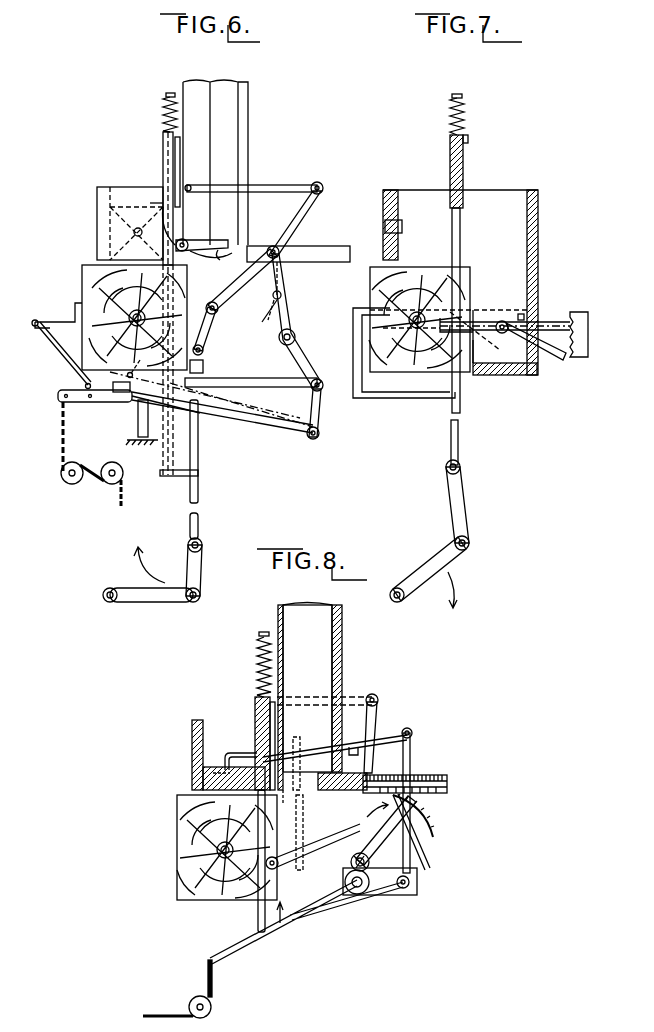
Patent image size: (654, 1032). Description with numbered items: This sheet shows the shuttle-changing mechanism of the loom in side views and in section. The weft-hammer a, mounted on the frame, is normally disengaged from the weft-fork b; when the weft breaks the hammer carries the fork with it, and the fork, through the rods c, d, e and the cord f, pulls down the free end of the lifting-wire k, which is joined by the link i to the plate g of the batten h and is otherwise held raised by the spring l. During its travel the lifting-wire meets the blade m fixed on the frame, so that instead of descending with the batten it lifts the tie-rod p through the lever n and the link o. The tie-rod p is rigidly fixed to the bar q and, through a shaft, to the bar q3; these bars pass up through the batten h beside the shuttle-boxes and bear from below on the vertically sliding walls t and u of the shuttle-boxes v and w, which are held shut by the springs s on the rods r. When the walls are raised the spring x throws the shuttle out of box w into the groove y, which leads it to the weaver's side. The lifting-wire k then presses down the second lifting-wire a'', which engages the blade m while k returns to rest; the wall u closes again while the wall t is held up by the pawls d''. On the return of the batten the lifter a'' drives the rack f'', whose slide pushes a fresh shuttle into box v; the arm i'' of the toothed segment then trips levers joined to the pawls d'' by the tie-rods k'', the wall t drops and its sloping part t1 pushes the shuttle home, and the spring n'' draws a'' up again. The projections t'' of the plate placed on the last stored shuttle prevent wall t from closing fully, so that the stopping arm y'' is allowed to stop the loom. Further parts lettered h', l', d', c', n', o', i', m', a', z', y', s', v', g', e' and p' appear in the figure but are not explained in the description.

In FIG. 6, the rod r is at (169, 87).
In FIG. 7, the rod r is at (457, 88).
In FIG. 8, the rod r is at (264, 626).
In FIG. 6, the spring s is at (162, 114).
In FIG. 7, the spring s is at (447, 116).
In FIG. 8, the spring s is at (255, 667).
In FIG. 6, the sliding wall t is at (159, 303).
In FIG. 8, the sliding wall t is at (254, 743).
In FIG. 6, the sloping part t1 is at (151, 195).
In FIG. 6, the shuttle-box v is at (116, 223).
In FIG. 8, the shuttle-box v is at (228, 743).
In FIG. 6, the column h' is at (226, 160).
In FIG. 8, the column h' is at (316, 681).
In FIG. 6, the projection t'' is at (254, 163).
In FIG. 8, the projection t'' is at (322, 697).
In FIG. 6, the tie-rod k'' is at (254, 178).
In FIG. 6, the inclined link l' is at (299, 224).
In FIG. 6, the plate g is at (298, 267).
In FIG. 8, the plate g is at (416, 783).
In FIG. 6, the pivoted arm d' is at (204, 233).
In FIG. 6, the hook c' is at (213, 267).
In FIG. 6, the lathe or batten h is at (123, 317).
In FIG. 7, the lathe or batten h is at (427, 318).
In FIG. 8, the lathe or batten h is at (216, 847).
In FIG. 6, the bracket n' is at (58, 325).
In FIG. 6, the spring l is at (61, 354).
In FIG. 6, the blade m is at (108, 417).
In FIG. 6, the slide o' is at (170, 368).
In FIG. 6, the link o is at (210, 326).
In FIG. 6, the lever n is at (242, 284).
In FIG. 6, the link i is at (297, 322).
In FIG. 6, the pivot i' is at (267, 291).
In FIG. 6, the connecting rod m' is at (261, 317).
In FIG. 6, the lifting-wire k is at (253, 399).
In FIG. 6, the bar a' is at (211, 409).
In FIG. 6, the tie-rod p is at (176, 420).
In FIG. 6, the bar q is at (181, 437).
In FIG. 8, the bar q is at (258, 916).
In FIG. 6, the cord f is at (102, 455).
In FIG. 8, the cord f is at (186, 989).
In FIG. 7, the sliding wall u is at (481, 193).
In FIG. 8, the sliding wall u is at (350, 703).
In FIG. 7, the shuttle-box w is at (422, 195).
In FIG. 7, the spring x is at (402, 226).
In FIG. 7, the pawl d'' is at (404, 363).
In FIG. 7, the bar q3 is at (455, 383).
In FIG. 7, the slide z' is at (470, 316).
In FIG. 7, the pivot y' is at (530, 312).
In FIG. 7, the stopping arm y'' is at (536, 336).
In FIG. 7, the groove y is at (493, 372).
In FIG. 7, the second lifting-wire a'' is at (591, 334).
In FIG. 8, the base s' is at (200, 773).
In FIG. 8, the weft-fork b is at (256, 752).
In FIG. 8, the rod c is at (353, 735).
In FIG. 8, the link v' is at (381, 733).
In FIG. 8, the rod d is at (347, 800).
In FIG. 8, the block g' is at (359, 770).
In FIG. 8, the rack f'' is at (426, 815).
In FIG. 8, the segment end e' is at (409, 825).
In FIG. 8, the weft-hammer a is at (327, 832).
In FIG. 8, the arm i'' is at (390, 832).
In FIG. 8, the spring n'' is at (313, 851).
In FIG. 8, the rod e is at (313, 916).
In FIG. 8, the pin p' is at (292, 811).